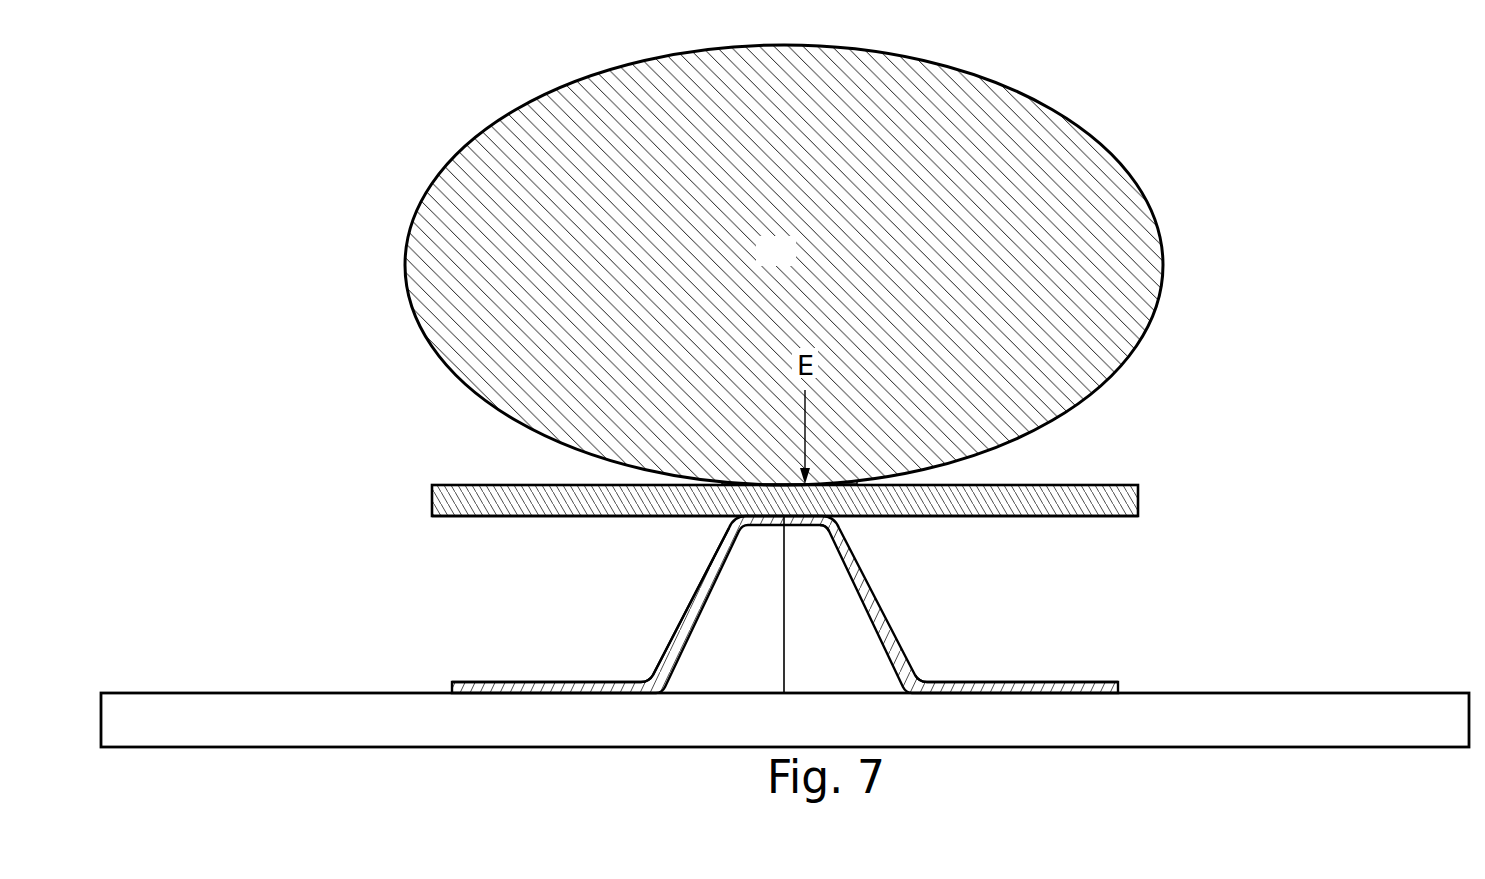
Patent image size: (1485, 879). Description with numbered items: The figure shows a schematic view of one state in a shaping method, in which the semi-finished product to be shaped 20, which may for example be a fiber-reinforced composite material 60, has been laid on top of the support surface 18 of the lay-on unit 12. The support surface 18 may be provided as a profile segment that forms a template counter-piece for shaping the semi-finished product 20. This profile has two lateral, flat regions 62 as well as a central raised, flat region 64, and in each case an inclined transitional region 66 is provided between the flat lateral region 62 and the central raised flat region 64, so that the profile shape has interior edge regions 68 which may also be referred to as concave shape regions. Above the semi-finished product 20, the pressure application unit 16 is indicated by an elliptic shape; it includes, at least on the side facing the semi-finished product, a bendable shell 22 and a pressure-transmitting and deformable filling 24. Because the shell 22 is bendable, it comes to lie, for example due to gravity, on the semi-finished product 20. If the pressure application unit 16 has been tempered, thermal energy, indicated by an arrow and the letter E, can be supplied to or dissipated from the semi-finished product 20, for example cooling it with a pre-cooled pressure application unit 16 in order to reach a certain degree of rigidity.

The lay-on unit 12 is at (372, 693).
The pressure application unit 16 is at (840, 265).
The support surface 18 is at (764, 604).
The semi-finished product to be shaped 20 is at (792, 486).
The bendable shell 22 is at (1040, 133).
The pressure-transmitting and deformable filling 24 is at (793, 263).
The fiber-reinforced composite material 60 is at (1083, 516).
The lateral flat region 62 is at (477, 684).
The central raised flat region 64 is at (808, 527).
The inclined transitional region 66 is at (695, 605).
The interior edge region 68 is at (648, 683).